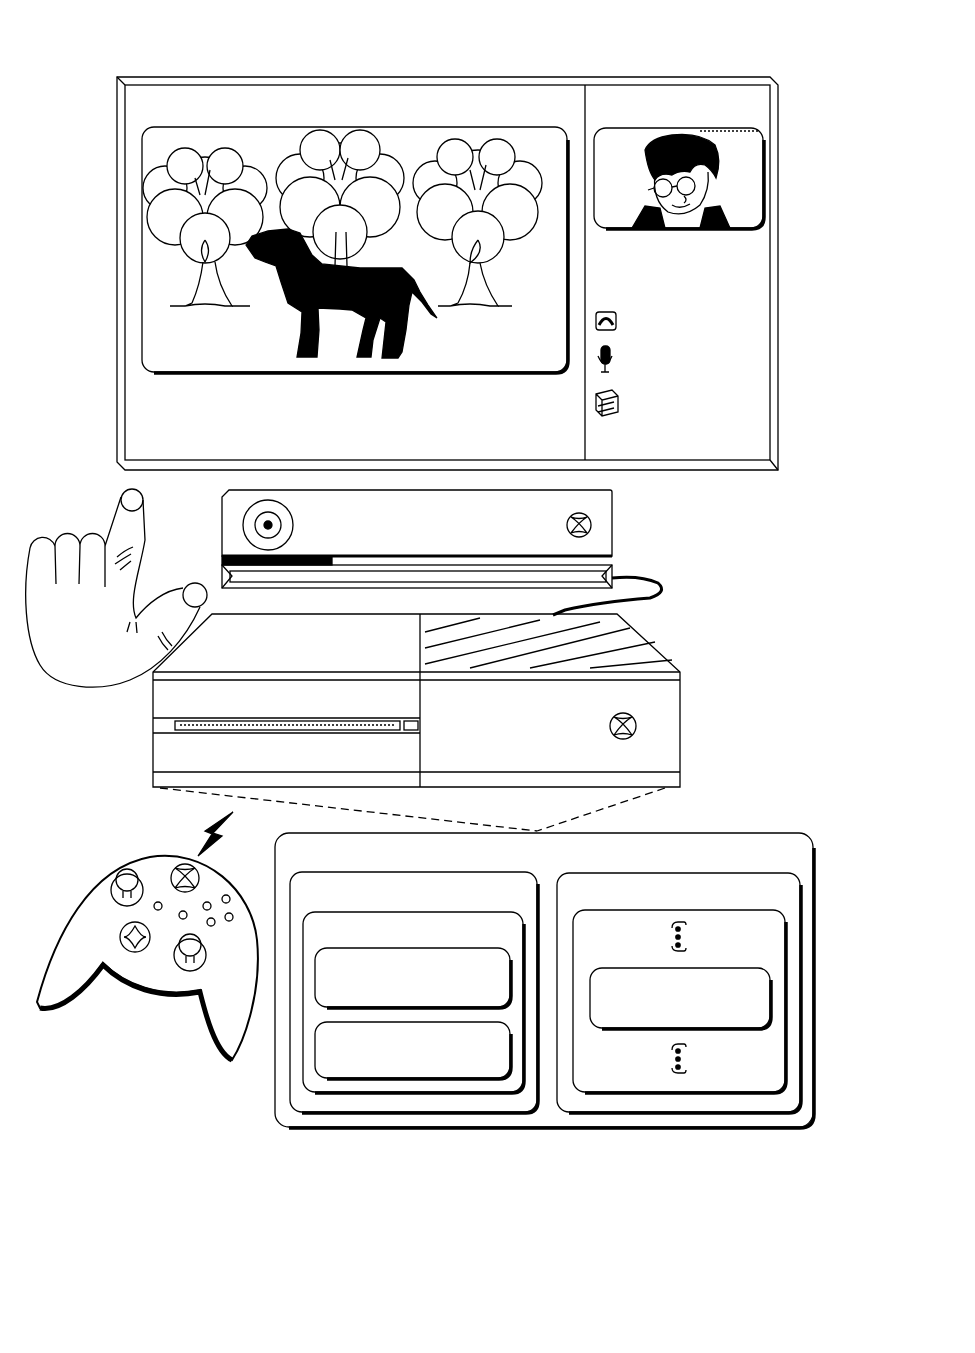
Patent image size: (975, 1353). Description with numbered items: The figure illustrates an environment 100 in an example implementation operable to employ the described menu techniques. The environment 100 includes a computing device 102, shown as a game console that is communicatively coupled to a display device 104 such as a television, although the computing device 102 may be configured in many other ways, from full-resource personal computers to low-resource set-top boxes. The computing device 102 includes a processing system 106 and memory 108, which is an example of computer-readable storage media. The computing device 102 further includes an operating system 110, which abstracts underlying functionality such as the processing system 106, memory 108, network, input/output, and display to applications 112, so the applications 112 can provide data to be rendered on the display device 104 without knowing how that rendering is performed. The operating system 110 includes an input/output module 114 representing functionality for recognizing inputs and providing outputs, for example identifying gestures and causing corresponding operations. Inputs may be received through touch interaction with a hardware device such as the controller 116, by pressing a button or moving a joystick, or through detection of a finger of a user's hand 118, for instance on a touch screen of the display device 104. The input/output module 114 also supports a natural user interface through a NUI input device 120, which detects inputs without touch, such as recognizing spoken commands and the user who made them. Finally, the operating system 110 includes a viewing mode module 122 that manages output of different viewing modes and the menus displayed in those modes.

The environment 100 is at (130, 62).
The computing device 102 is at (647, 860).
The display device 104 is at (116, 266).
The processing system 106 is at (520, 899).
The memory 108 is at (735, 901).
The operating system 110 is at (512, 938).
The applications 112 is at (696, 1021).
The input/output module 114 is at (465, 999).
The controller 116 is at (146, 855).
The user's hand 118 is at (96, 639).
The NUI input device 120 is at (612, 528).
The viewing mode module 122 is at (465, 1071).